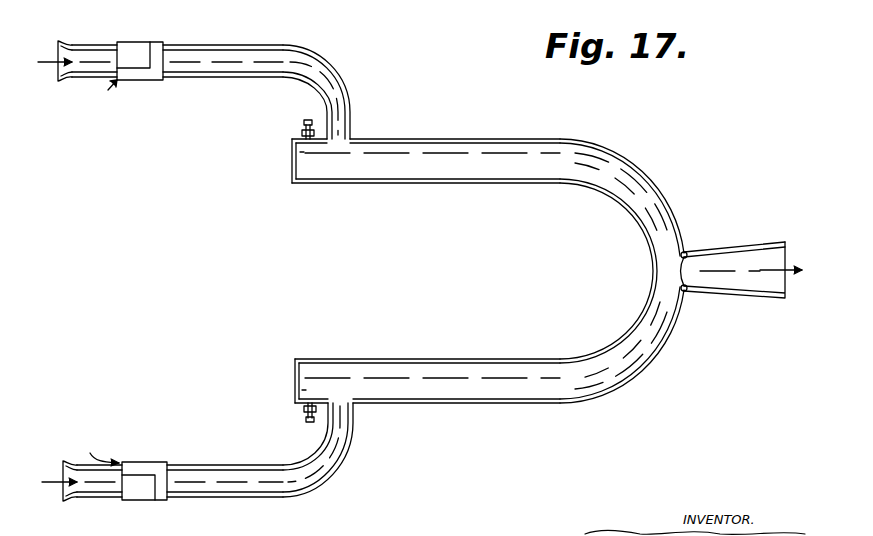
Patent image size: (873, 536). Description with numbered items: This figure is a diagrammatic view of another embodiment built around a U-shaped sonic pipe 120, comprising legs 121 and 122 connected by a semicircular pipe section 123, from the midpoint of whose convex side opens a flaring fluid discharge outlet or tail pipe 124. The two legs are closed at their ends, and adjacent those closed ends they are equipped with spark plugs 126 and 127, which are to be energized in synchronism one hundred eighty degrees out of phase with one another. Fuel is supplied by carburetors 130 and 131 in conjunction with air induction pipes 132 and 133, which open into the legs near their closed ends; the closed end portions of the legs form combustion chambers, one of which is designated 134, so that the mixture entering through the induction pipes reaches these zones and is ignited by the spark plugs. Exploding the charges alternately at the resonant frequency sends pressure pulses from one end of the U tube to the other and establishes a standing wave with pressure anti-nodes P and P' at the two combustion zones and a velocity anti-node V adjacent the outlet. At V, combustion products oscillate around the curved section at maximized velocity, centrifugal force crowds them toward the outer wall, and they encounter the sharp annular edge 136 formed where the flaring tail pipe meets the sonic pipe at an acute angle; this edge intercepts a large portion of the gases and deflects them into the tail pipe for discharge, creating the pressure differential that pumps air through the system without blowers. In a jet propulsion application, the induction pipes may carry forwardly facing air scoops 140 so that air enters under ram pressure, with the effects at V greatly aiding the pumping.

The U-shaped sonic pipe 120 is at (630, 152).
The leg 121 is at (500, 146).
The leg 122 is at (470, 368).
The semicircular pipe section 123 is at (680, 229).
The fluid discharge outlet or tail pipe 124 is at (752, 293).
The spark plug 126 is at (300, 130).
The spark plug 127 is at (305, 418).
The carburetor 130 is at (160, 44).
The carburetor 131 is at (138, 500).
The air induction pipe 132 is at (316, 57).
The air induction pipe 133 is at (313, 168).
The combustion chamber 134 is at (320, 374).
The sharp annular edge 136 is at (686, 247).
The forwardly facing air scoop 140 is at (60, 47).
The pressure anti-node P is at (274, 163).
The pressure anti-node P' is at (277, 391).
The velocity anti-node V is at (668, 263).